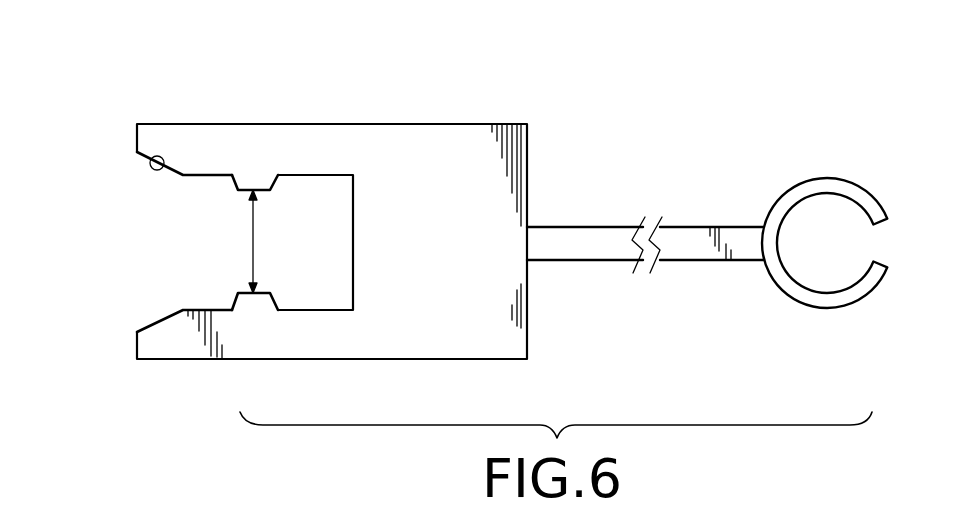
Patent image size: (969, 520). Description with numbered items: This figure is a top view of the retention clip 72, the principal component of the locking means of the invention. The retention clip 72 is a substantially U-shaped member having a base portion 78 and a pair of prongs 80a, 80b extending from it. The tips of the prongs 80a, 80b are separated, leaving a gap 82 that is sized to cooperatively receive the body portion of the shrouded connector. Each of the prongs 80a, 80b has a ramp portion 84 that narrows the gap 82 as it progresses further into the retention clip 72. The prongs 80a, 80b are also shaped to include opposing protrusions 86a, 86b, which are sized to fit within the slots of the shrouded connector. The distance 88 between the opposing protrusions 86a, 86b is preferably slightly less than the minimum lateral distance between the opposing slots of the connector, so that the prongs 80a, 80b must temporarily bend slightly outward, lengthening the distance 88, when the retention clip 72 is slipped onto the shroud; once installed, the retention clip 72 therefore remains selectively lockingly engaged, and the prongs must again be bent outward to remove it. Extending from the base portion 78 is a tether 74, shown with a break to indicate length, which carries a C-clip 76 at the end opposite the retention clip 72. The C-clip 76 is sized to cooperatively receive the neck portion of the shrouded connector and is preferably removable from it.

The retention clip 72 is at (416, 124).
The tether 74 is at (685, 238).
The C-clip 76 is at (823, 180).
The base portion 78 is at (487, 325).
The prong 80a is at (135, 150).
The prong 80b is at (137, 347).
The gap 82 is at (185, 220).
The ramp portion 84 is at (147, 157).
The protrusion 86a is at (252, 190).
The protrusion 86b is at (253, 293).
The distance 88 is at (253, 252).